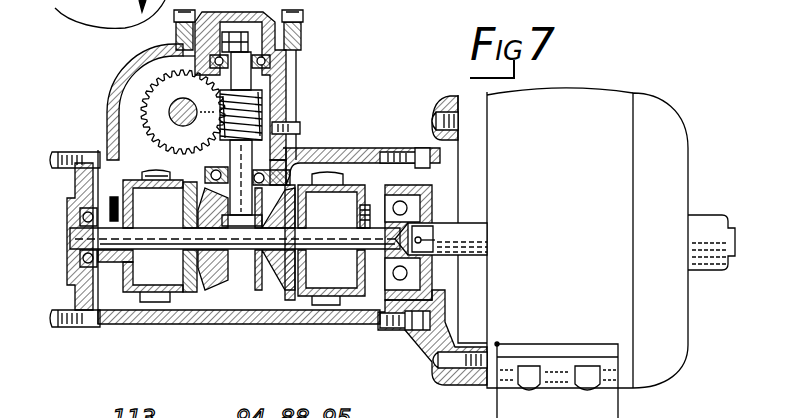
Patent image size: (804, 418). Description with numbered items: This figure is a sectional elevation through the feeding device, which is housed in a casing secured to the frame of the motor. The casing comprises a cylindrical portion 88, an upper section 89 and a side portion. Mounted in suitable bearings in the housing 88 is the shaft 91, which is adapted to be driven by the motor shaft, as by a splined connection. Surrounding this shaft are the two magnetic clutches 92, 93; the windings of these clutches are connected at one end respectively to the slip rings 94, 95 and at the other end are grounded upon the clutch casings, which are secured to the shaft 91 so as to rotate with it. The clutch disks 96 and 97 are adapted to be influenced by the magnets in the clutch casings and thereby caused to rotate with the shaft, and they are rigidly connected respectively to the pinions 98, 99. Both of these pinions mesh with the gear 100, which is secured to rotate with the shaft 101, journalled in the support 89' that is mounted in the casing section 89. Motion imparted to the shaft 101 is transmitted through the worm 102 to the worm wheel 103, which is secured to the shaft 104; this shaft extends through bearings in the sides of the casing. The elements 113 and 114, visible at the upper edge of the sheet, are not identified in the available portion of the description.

The cylindrical portion 88 is at (392, 332).
The upper section 89 is at (248, 85).
The support 89' is at (333, 111).
The shaft 91 is at (78, 240).
The magnetic clutch 92 is at (117, 262).
The magnetic clutch 93 is at (380, 328).
The slip ring 94 is at (148, 302).
The slip ring 95 is at (335, 300).
The clutch disk 96 is at (186, 295).
The clutch disk 97 is at (292, 285).
The pinion 98 is at (215, 278).
The pinion 99 is at (263, 268).
The gear 100 is at (266, 194).
The shaft 101 is at (288, 72).
The worm 102 is at (270, 100).
The worm wheel 103 is at (150, 92).
The shaft 104 is at (169, 113).
The callout 113 is at (58, 10).
The callout 114 is at (118, 0).